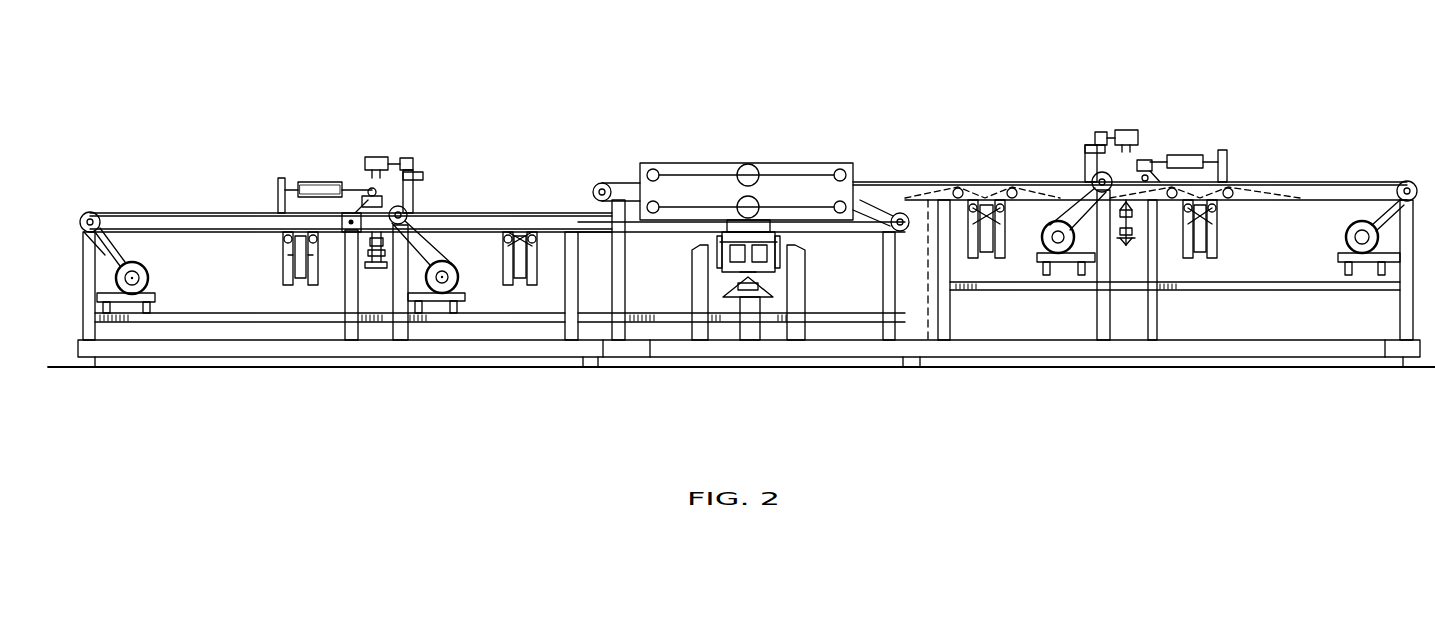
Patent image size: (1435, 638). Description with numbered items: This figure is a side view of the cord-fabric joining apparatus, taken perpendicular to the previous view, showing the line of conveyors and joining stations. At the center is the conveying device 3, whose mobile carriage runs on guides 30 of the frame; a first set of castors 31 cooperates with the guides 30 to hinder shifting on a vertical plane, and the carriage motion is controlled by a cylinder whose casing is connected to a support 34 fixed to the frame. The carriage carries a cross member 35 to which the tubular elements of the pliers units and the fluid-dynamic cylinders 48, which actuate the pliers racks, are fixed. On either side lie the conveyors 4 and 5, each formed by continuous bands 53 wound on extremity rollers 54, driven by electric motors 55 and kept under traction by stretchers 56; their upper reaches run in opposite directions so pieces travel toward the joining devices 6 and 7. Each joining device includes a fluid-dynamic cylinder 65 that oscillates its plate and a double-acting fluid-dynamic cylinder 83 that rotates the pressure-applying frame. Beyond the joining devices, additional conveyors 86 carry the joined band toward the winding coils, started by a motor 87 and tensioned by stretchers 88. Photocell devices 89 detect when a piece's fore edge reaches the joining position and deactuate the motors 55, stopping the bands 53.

The conveying device 3 is at (765, 104).
The conveyor 4 is at (502, 137).
The conveyor 5 is at (1007, 130).
The joining device 6 is at (325, 143).
The joining device 7 is at (1185, 106).
The guides 30 is at (722, 252).
The first set of castors 31 is at (728, 253).
The support 34 is at (743, 315).
The cross member 35 is at (790, 190).
The fluid-dynamic cylinder 48 is at (647, 203).
The continuous bands 53 is at (110, 212).
The extremity rollers 54 is at (598, 182).
The electric motors 55 is at (446, 262).
The stretchers 56 is at (520, 274).
The fluid-dynamic cylinder 65 is at (365, 262).
The fluid-dynamic cylinder 83 is at (305, 183).
The additional conveyors 86 is at (747, 160).
The motor 87 is at (130, 295).
The stretchers 88 is at (288, 280).
The photocell devices 89 is at (372, 157).